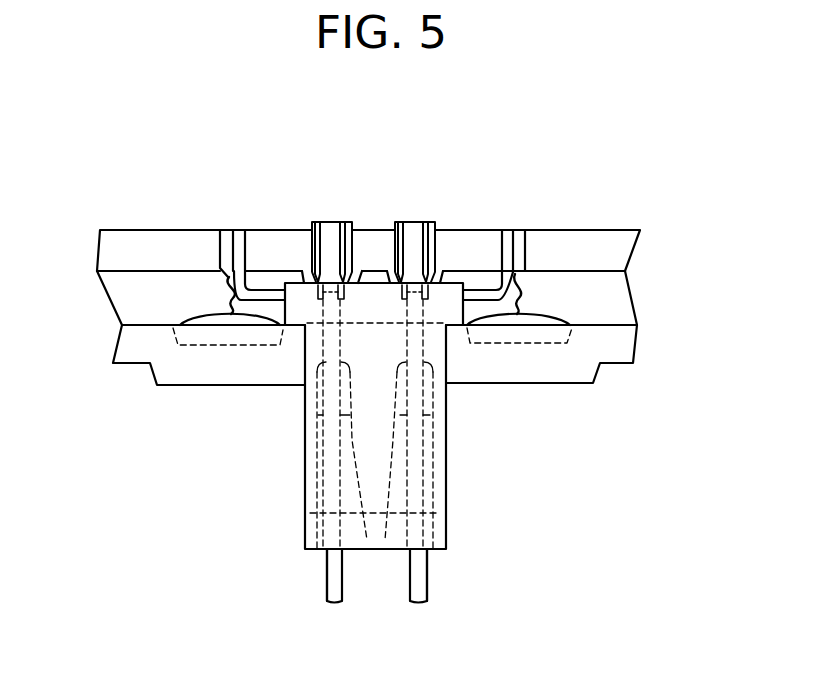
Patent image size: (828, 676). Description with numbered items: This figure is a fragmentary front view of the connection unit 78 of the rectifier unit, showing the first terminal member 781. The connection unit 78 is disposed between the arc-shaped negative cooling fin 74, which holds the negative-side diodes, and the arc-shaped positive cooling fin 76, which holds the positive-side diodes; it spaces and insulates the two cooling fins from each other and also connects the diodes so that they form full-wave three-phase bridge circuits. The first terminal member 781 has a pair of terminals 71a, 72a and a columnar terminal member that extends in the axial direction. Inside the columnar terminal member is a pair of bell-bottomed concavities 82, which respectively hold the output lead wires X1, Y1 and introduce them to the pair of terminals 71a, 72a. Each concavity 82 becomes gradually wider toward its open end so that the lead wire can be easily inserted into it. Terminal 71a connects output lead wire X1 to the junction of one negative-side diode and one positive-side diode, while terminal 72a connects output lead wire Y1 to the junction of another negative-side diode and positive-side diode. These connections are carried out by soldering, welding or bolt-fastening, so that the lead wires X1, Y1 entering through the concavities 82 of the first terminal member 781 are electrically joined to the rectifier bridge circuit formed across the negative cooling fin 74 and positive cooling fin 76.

The terminal 71a is at (345, 221).
The terminal 72a is at (428, 221).
The negative cooling fin 74 is at (602, 229).
The positive cooling fin 76 is at (617, 363).
The connection unit 78 is at (495, 431).
The first terminal member 781 is at (446, 502).
The bell-bottomed concavity 82 is at (309, 408).
The output lead wire X1 is at (327, 565).
The output lead wire Y1 is at (427, 563).